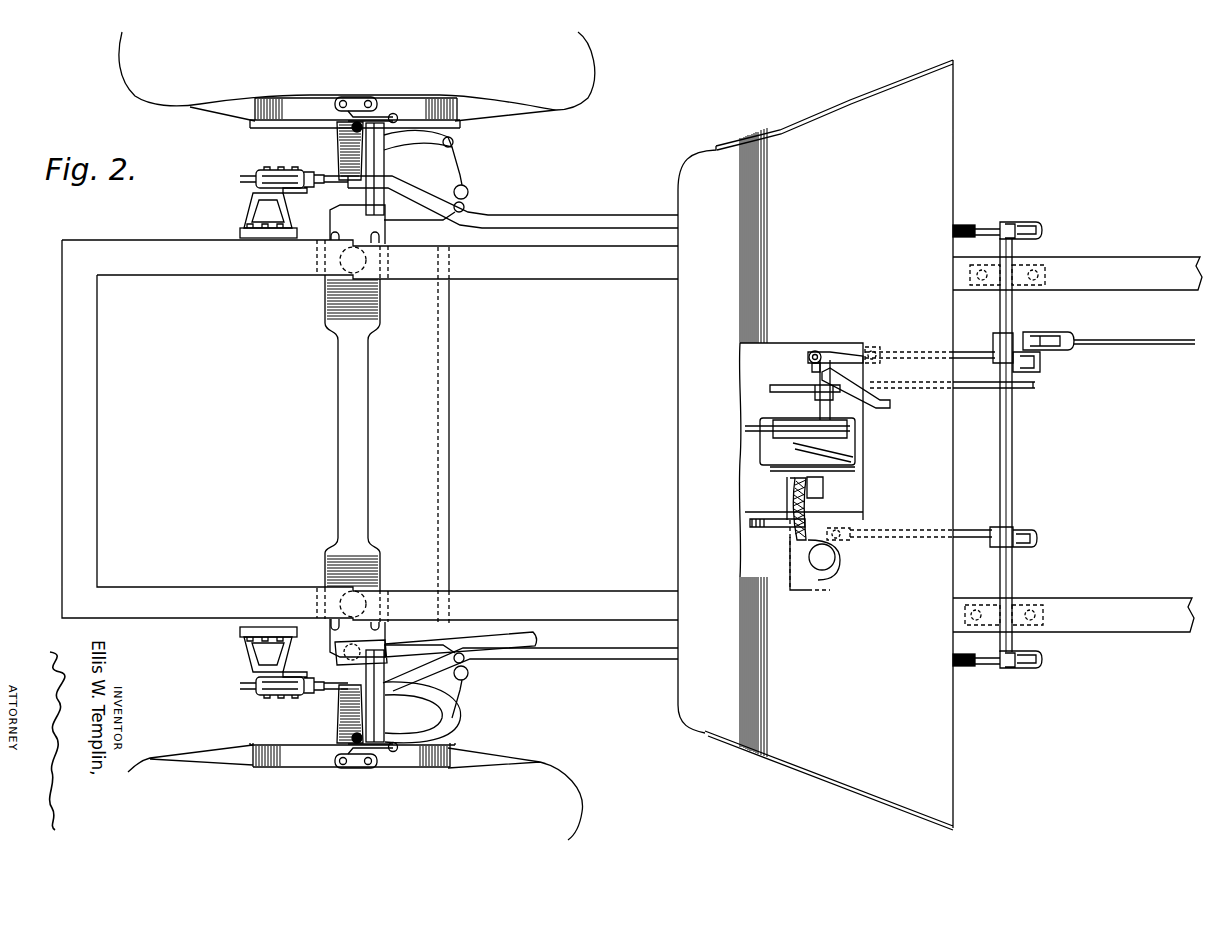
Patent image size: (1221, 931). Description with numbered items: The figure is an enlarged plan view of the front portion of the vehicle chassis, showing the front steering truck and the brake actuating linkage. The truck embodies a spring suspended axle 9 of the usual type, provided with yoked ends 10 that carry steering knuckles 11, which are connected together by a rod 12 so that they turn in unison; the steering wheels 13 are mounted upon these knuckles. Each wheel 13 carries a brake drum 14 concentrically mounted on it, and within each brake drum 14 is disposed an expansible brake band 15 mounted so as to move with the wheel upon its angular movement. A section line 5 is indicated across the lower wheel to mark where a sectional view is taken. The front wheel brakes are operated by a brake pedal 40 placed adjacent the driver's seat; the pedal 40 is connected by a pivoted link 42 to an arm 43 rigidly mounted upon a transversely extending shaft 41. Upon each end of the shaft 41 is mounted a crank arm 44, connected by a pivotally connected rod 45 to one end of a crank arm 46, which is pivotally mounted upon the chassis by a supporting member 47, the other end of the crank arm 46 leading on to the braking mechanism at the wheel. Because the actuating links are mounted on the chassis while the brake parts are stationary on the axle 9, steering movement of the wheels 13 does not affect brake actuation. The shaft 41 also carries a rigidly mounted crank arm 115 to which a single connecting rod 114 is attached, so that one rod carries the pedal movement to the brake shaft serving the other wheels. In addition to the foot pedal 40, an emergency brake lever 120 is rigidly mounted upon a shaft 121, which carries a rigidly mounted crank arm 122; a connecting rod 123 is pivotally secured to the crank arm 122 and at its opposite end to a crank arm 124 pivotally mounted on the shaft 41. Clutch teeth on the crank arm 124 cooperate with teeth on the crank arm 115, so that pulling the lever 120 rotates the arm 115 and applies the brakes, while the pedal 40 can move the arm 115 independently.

The section line 5- 5 is at (250, 725).
The spring suspended axle 9 is at (345, 412).
The yoked ends 10 is at (337, 150).
The steering knuckles 11 is at (272, 118).
The rod 12 is at (449, 428).
The steering wheels 13 is at (551, 102).
The brake drum 14 is at (259, 742).
The expansible brake band 15 is at (588, 215).
The brake pedal 40 is at (806, 510).
The transversely extending shaft 41 is at (1013, 472).
The pivoted link 42 is at (963, 530).
The arm 43 is at (1020, 545).
The crank arm 44 is at (1010, 224).
The pivotally connected rod 45 is at (608, 660).
The crank arm 46 is at (256, 178).
The supporting member 47 is at (250, 208).
The connecting rod 114 is at (1136, 348).
The crank arm 115 is at (1015, 336).
The emergency brake lever 120 is at (884, 408).
The shaft 121 is at (812, 366).
The crank arm 122 is at (848, 352).
The connecting rod 123 is at (967, 352).
The crank arm 124 is at (1040, 368).